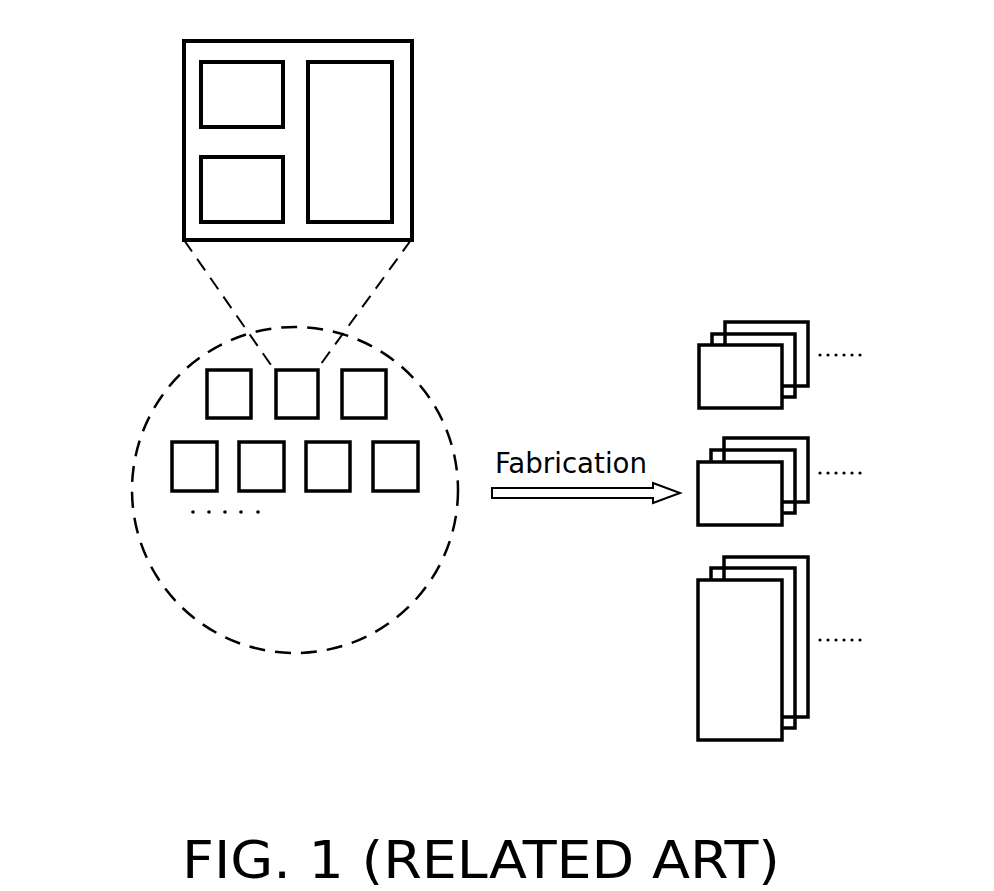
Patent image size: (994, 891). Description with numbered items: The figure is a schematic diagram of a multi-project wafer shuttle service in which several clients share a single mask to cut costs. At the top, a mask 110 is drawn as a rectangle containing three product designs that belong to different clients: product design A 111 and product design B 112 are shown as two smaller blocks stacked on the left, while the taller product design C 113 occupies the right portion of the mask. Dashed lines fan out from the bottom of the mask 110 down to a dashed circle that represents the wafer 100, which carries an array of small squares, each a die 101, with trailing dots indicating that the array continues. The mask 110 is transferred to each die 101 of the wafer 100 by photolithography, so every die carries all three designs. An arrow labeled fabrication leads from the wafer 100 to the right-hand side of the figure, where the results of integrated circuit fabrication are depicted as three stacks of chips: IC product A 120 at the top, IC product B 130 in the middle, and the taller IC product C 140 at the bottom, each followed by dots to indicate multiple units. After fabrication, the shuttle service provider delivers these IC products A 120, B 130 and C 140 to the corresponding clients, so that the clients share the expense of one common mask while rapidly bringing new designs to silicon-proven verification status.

The wafer 100 is at (334, 464).
The die 101 is at (318, 390).
The mask 110 is at (412, 70).
The product design A 111 is at (201, 93).
The product design B 112 is at (201, 187).
The product design C 113 is at (392, 138).
The IC product A 120 is at (699, 358).
The IC product B 130 is at (698, 480).
The IC product C 140 is at (698, 655).